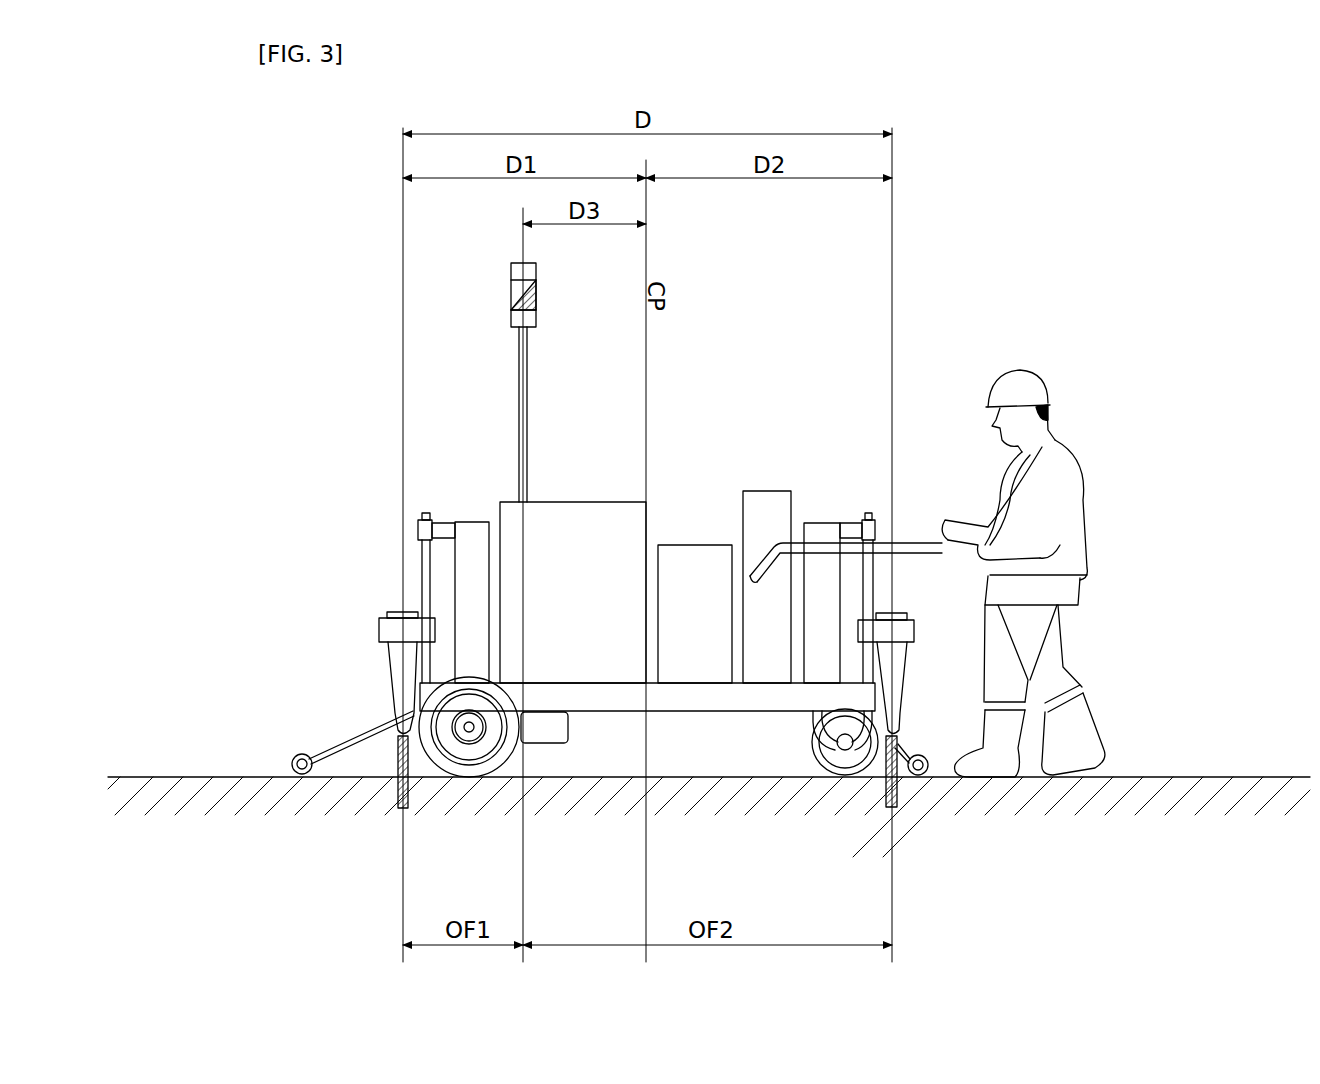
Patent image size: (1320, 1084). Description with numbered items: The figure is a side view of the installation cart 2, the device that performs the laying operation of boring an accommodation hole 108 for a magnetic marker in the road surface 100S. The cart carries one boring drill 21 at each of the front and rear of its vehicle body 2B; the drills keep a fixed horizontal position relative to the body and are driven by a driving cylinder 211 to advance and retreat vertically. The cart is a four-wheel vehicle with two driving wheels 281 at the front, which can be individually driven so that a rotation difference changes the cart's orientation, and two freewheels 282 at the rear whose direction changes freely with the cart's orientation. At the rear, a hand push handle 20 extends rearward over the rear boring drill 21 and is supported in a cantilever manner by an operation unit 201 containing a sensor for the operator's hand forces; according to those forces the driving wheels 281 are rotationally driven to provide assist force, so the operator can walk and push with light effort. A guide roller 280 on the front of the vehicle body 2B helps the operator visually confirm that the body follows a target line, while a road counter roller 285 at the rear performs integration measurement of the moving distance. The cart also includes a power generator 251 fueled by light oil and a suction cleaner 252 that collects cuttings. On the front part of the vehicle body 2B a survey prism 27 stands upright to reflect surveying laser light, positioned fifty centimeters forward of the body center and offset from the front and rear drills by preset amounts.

The installation cart 2 is at (1003, 282).
The hand push handle 20 is at (912, 548).
The boring drill 21 is at (395, 663).
The survey prism 27 is at (517, 273).
The road surface 100S is at (250, 777).
The accommodation hole 108 is at (400, 806).
The operation unit 201 is at (765, 505).
The driving cylinder 211 is at (482, 533).
The power generator 251 is at (572, 517).
The suction cleaner 252 is at (695, 558).
The guide roller 280 is at (302, 775).
The driving wheel 281 is at (484, 770).
The freewheel 282 is at (830, 770).
The road counter roller 285 is at (925, 777).
The vehicle body 2B is at (735, 702).